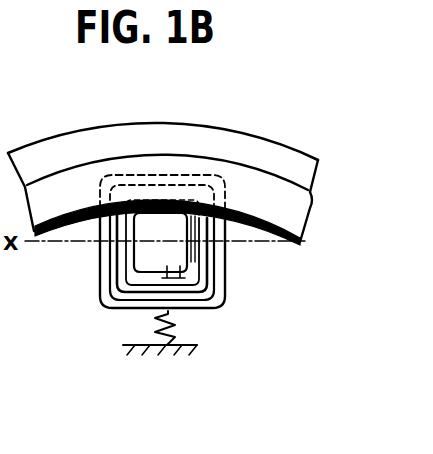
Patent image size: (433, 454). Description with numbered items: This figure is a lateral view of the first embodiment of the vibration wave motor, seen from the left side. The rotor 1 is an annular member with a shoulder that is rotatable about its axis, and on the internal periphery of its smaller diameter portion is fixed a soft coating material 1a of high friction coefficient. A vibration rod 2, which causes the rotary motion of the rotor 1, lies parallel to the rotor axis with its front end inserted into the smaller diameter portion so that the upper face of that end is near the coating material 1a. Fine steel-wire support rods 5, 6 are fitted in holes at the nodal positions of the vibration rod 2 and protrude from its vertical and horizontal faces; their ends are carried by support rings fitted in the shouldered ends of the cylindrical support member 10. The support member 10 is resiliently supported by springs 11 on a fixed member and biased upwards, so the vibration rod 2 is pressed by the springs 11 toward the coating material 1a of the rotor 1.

The rotor 1 is at (247, 147).
The soft coating material 1a is at (283, 243).
The vibration rod 2 is at (128, 247).
The support rod 5 is at (143, 262).
The support rod 6 is at (173, 267).
The cylindrical support member 10 is at (225, 298).
The springs 11 is at (173, 338).